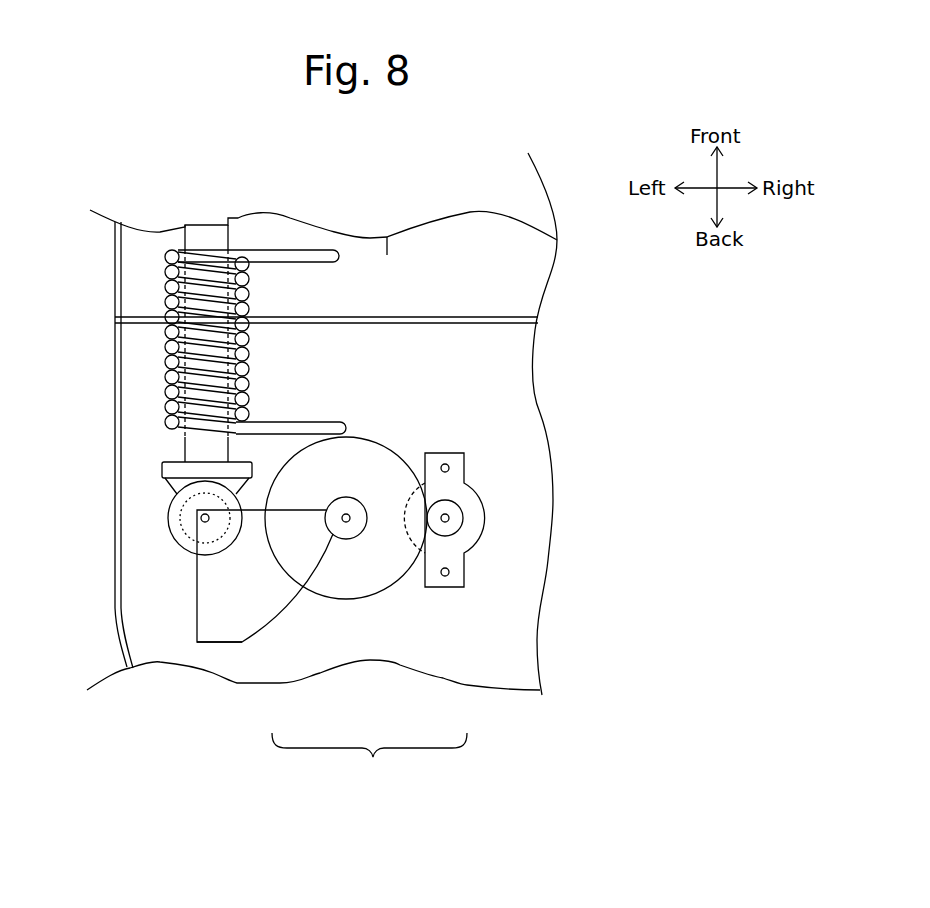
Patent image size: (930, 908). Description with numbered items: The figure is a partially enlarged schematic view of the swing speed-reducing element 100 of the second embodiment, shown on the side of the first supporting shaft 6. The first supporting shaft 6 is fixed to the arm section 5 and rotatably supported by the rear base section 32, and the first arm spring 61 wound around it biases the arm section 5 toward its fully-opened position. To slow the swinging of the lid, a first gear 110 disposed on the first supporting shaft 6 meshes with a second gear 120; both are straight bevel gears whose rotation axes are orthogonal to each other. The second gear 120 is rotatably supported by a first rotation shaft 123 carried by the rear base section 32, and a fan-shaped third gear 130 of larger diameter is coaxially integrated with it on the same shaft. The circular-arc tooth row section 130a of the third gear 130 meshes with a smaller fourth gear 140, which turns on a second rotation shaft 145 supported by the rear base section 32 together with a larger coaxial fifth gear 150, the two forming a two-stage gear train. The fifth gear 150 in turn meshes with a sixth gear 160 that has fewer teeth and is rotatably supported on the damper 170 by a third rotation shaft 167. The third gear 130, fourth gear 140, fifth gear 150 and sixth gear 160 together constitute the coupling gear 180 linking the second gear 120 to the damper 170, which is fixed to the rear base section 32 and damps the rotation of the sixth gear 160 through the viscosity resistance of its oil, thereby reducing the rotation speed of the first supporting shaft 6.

The arm section 5 is at (388, 237).
The first supporting shaft 6 is at (202, 237).
The first arm spring 61 is at (173, 302).
The swing speed-reducing element 100 is at (516, 378).
The first gear 110 is at (163, 470).
The first rotation shaft 123 is at (170, 490).
The second gear 120 is at (170, 533).
The third gear 130 is at (260, 590).
The tooth row section 130a is at (242, 642).
The fourth gear 140 is at (357, 562).
The second rotation shaft 145 is at (347, 495).
The fifth gear 150 is at (318, 580).
The sixth gear 160 is at (447, 587).
The damper 170 is at (457, 490).
The third rotation shaft 167 is at (447, 515).
The rear base section 32 is at (508, 640).
The coupling gear 180 is at (369, 761).